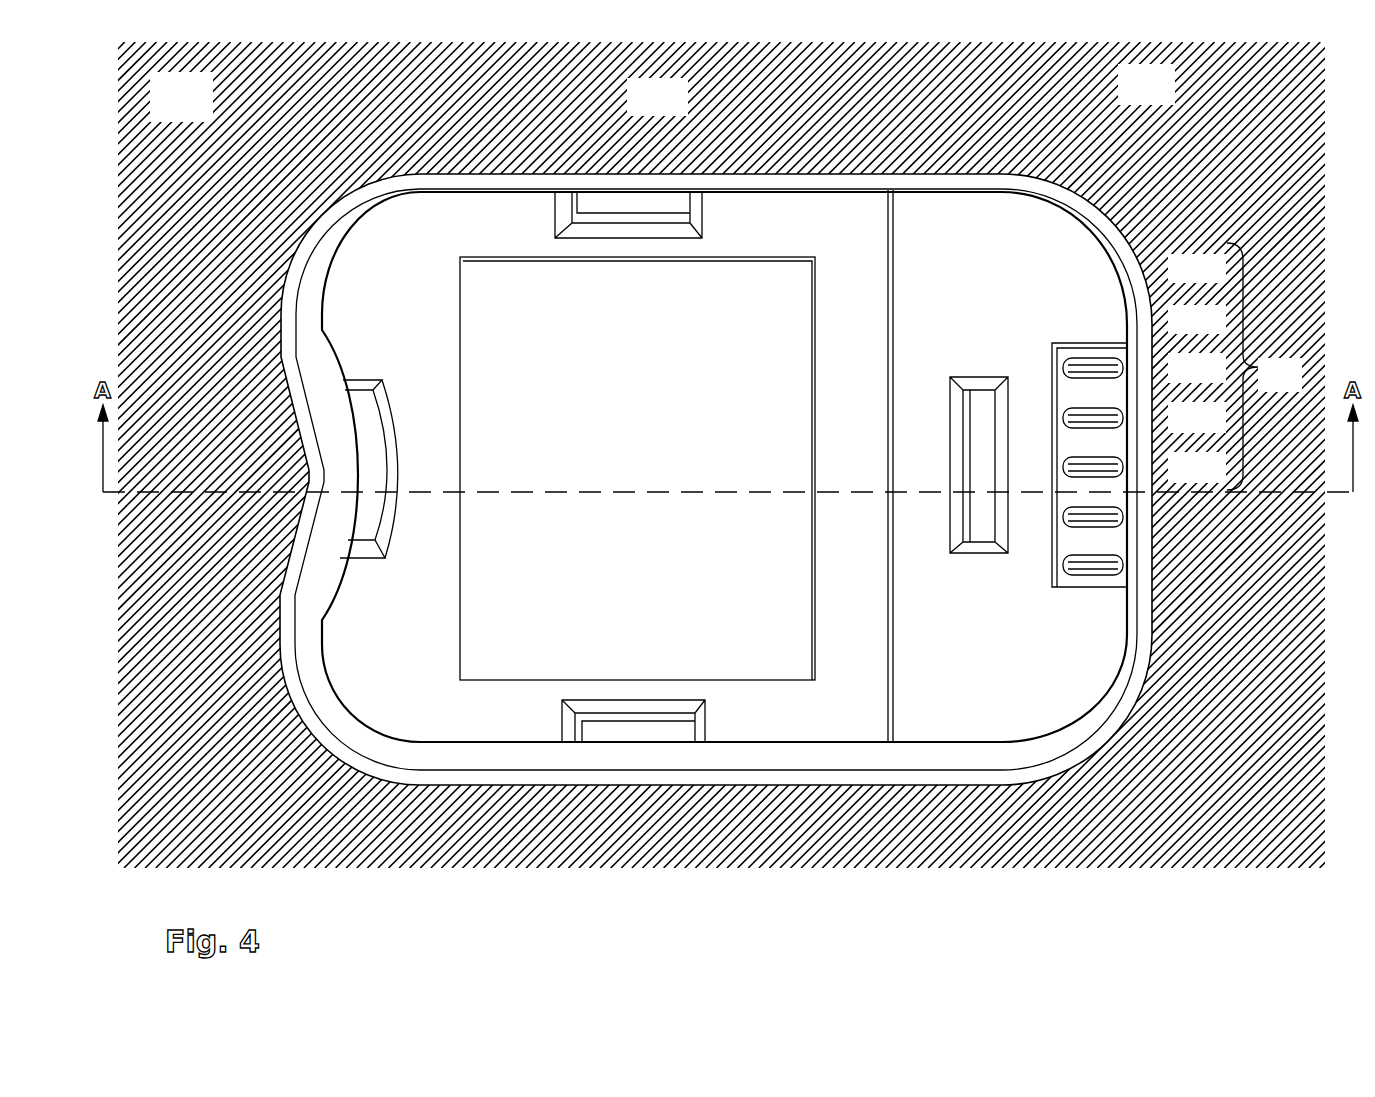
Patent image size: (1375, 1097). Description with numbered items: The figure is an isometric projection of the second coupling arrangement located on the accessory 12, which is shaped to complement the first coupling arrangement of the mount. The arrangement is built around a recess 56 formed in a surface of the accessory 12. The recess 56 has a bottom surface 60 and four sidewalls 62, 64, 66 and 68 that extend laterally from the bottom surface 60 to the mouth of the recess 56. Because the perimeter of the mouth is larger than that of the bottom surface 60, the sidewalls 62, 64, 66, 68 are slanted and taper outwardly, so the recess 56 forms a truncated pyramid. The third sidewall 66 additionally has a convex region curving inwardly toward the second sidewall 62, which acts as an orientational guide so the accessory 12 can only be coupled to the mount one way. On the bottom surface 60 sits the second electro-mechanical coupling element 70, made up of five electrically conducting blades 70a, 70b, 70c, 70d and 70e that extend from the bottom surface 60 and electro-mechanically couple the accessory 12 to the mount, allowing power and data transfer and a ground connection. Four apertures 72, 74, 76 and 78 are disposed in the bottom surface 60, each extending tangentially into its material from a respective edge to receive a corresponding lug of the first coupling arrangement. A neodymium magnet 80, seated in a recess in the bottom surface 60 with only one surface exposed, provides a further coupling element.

The accessory 12 is at (198, 111).
The recess 56 is at (1078, 189).
The bottom surface 60 is at (838, 700).
The second sidewall 62 is at (1113, 338).
The sidewall 64 is at (845, 193).
The third sidewall 66 is at (302, 322).
The sidewall 68 is at (778, 762).
The second electro-mechanical coupling element 70 is at (1179, 409).
The blade 70a is at (1122, 357).
The blade 70b is at (1103, 416).
The blade 70c is at (1107, 465).
The blade 70d is at (1105, 515).
The blade 70e is at (1105, 563).
The first aperture 72 is at (988, 500).
The second aperture 74 is at (615, 198).
The third aperture 76 is at (368, 522).
The fourth aperture 78 is at (606, 725).
The neodymium magnet 80 is at (510, 600).